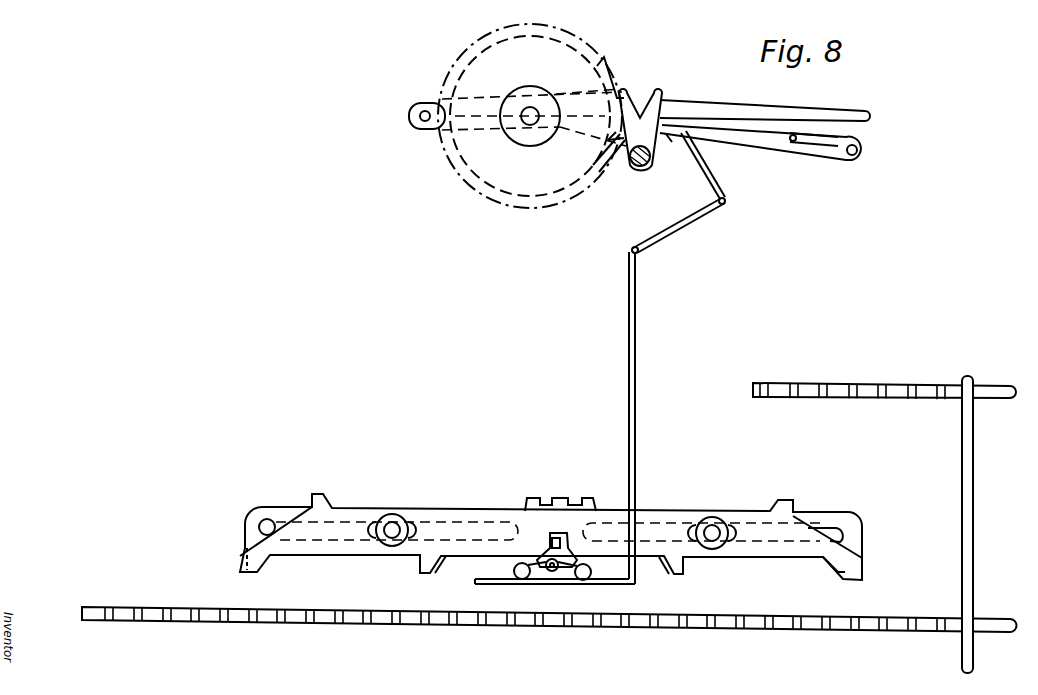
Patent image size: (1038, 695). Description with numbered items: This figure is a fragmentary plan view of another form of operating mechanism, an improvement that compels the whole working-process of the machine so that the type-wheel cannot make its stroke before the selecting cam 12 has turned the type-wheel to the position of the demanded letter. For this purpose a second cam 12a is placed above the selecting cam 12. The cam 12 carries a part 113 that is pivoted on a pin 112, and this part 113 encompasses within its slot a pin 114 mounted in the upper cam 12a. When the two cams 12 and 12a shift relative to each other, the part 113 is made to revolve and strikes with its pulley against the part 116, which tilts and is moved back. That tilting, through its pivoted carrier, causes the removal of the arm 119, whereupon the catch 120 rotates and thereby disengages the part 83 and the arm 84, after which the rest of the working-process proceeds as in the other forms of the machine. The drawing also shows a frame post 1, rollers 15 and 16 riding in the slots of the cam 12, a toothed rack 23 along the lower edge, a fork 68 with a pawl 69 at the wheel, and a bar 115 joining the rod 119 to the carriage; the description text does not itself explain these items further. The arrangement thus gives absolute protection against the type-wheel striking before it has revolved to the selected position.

The frame post 1 is at (967, 503).
The selecting cam 12 is at (818, 523).
The second cam 12a is at (848, 568).
The roller 15 is at (713, 522).
The roller 16 is at (267, 522).
The rack 23 is at (742, 617).
The fork lever 68 is at (623, 103).
The pawl 69 is at (664, 137).
The part 83 is at (739, 136).
The arm 84 is at (705, 108).
The pin 112 is at (546, 572).
The part 113 is at (561, 533).
The pin 114 is at (553, 534).
The connecting bar 115 is at (603, 585).
The part 116 is at (561, 574).
The arm 119 is at (630, 413).
The catch 120 is at (687, 225).